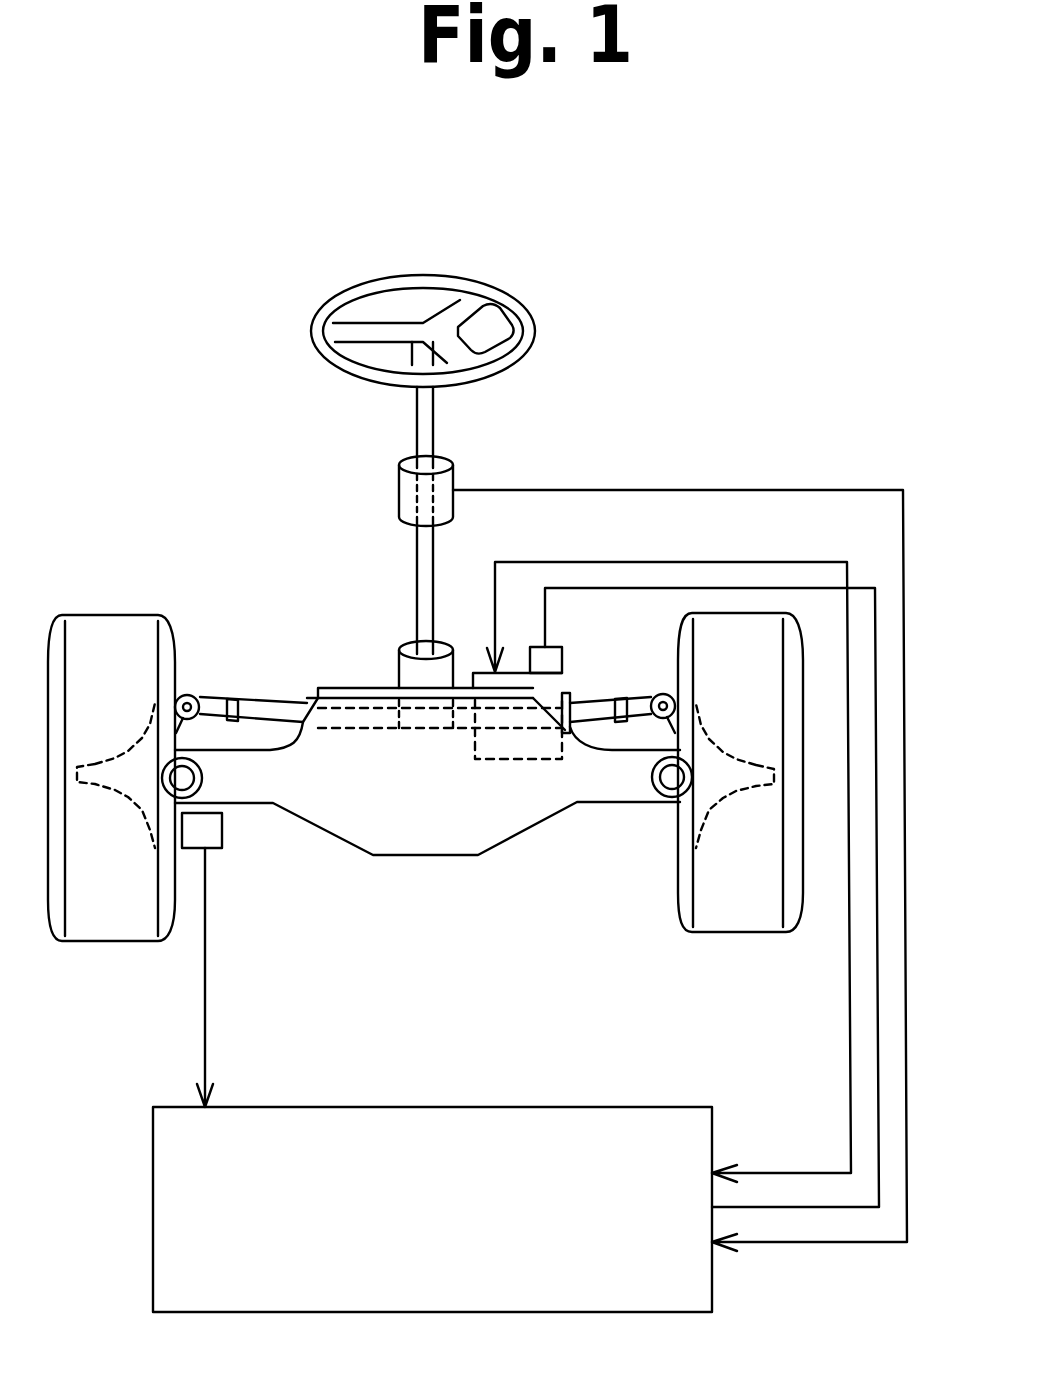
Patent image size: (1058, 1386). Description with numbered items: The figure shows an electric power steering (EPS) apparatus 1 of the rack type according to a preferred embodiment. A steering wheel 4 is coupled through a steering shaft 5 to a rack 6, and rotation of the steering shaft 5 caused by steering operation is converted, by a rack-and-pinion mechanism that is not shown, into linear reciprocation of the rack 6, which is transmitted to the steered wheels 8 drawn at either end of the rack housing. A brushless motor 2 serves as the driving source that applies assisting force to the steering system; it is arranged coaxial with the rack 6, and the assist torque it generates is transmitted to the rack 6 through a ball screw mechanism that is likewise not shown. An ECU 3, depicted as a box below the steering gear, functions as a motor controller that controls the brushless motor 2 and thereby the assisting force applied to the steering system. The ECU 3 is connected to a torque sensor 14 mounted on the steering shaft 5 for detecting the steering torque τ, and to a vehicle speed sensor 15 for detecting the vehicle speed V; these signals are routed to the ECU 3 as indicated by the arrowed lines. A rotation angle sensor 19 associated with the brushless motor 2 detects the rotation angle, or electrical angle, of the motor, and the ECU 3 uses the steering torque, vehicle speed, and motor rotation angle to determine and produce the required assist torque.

The EPS apparatus 1 is at (751, 237).
The brushless motor 2 is at (505, 759).
The ECU 3 is at (540, 1107).
The steering wheel 4 is at (522, 316).
The steering shaft 5 is at (416, 585).
The rack 6 is at (363, 728).
The steered wheels 8 is at (112, 942).
The torque sensor 14 is at (399, 490).
The vehicle speed sensor 15 is at (222, 830).
The rotation angle sensor 19 is at (565, 643).